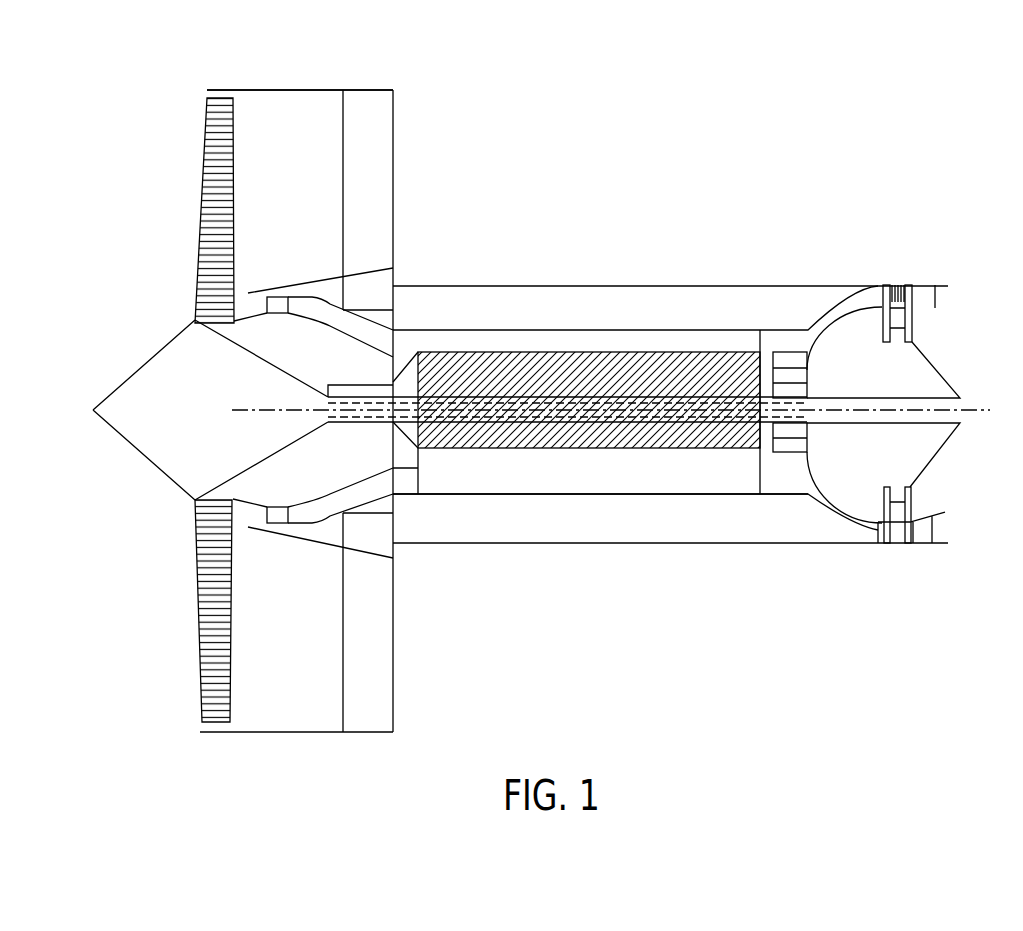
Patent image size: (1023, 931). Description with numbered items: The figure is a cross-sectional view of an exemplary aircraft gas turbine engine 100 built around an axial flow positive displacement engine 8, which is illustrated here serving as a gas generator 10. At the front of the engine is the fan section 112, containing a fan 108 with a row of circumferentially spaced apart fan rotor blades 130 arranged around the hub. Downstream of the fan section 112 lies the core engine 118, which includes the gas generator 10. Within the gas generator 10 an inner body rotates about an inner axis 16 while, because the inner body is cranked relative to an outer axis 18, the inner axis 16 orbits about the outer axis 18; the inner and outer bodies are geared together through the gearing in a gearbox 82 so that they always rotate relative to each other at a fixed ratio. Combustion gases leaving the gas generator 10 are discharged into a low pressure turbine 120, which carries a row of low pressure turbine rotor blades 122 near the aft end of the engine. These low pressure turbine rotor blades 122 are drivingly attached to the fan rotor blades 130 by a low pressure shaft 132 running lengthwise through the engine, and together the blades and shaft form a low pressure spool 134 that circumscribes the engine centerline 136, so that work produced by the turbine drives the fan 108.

The gas turbine engine 100 is at (278, 747).
The fan section 112 is at (262, 80).
The fan 108 is at (503, 410).
The fan rotor blades 130 is at (236, 188).
The low pressure shaft 132 is at (255, 357).
The low pressure spool 134 is at (313, 366).
The inner axis 16 is at (385, 382).
The gas generator 10 is at (683, 330).
The outer axis 18 is at (628, 428).
The gearbox 82 is at (788, 453).
The engine centerline 136 is at (977, 412).
The axial flow positive displacement engine 8 is at (720, 505).
The core engine 118 is at (499, 505).
The low pressure turbine 120 is at (895, 266).
The low pressure turbine rotor blades 122 is at (900, 297).